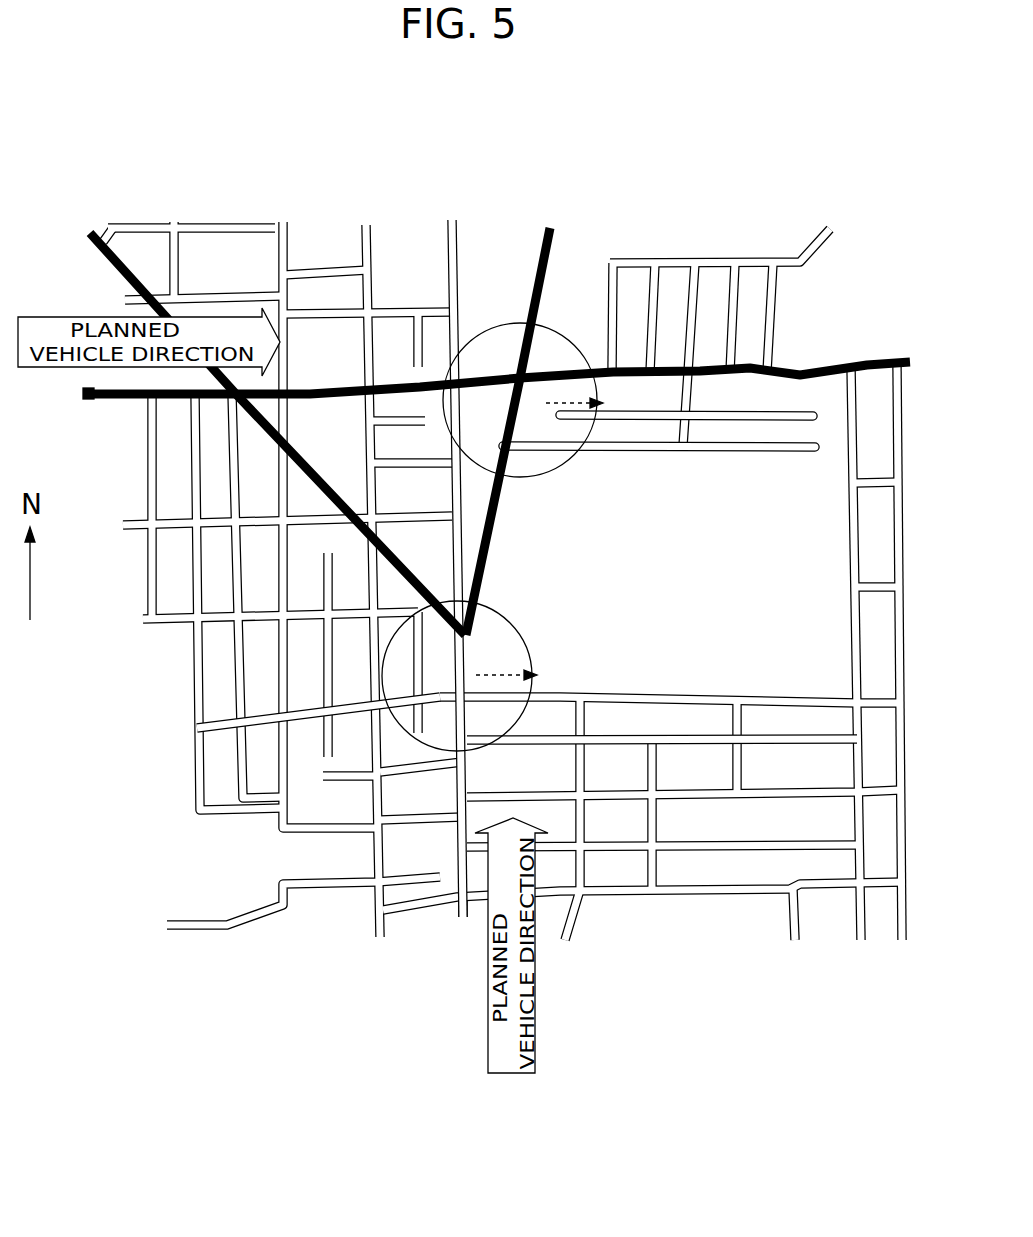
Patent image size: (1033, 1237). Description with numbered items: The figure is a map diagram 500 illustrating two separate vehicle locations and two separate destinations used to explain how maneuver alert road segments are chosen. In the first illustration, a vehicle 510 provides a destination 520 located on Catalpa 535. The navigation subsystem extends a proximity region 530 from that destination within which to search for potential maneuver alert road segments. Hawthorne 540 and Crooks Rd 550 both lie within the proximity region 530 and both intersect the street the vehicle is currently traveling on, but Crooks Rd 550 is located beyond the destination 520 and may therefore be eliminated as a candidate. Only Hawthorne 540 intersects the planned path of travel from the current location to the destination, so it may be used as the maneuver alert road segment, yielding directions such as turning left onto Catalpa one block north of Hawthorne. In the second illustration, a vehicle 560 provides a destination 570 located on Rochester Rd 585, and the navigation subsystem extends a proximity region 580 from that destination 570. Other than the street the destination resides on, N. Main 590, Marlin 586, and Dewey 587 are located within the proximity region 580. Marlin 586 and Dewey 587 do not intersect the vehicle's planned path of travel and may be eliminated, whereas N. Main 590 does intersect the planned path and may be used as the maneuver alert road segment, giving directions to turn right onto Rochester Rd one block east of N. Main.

The map diagram 500 is at (118, 30).
The vehicle 510 is at (462, 808).
The destination 520 is at (457, 676).
The proximity region 530 is at (526, 673).
The Catalpa 535 is at (203, 720).
The Hawthorne 540 is at (662, 740).
The Crooks Rd 550 is at (277, 434).
The vehicle 560 is at (153, 367).
The destination 570 is at (520, 400).
The proximity region 580 is at (594, 400).
The Rochester Rd 585 is at (518, 408).
The Marlin 586 is at (686, 413).
The Dewey 587 is at (659, 447).
The N. Main 590 is at (452, 437).